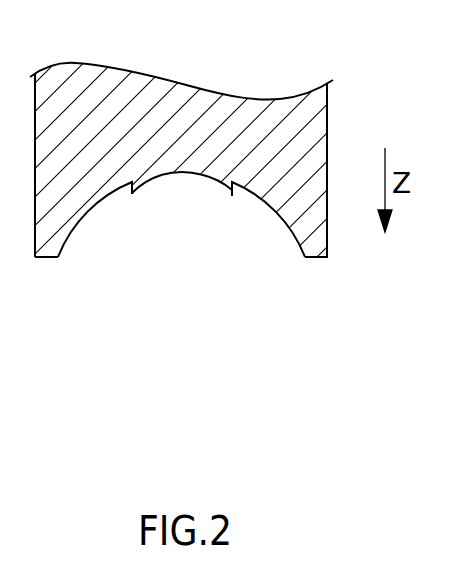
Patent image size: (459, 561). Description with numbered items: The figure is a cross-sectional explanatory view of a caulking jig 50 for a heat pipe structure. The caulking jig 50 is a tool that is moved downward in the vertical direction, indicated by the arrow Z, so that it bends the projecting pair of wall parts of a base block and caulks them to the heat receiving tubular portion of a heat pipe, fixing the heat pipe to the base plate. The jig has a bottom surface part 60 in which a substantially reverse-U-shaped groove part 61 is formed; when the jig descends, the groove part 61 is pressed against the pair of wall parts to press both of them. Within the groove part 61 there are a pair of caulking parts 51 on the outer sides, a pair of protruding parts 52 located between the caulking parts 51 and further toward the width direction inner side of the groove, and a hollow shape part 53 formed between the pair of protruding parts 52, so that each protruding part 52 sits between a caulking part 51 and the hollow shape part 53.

The caulking jig 50 is at (328, 122).
The bottom surface part 60 is at (190, 183).
The groove part 61 is at (184, 285).
The caulking parts 51 is at (70, 226).
The protruding parts 52 is at (134, 196).
The hollow shape part 53 is at (176, 174).